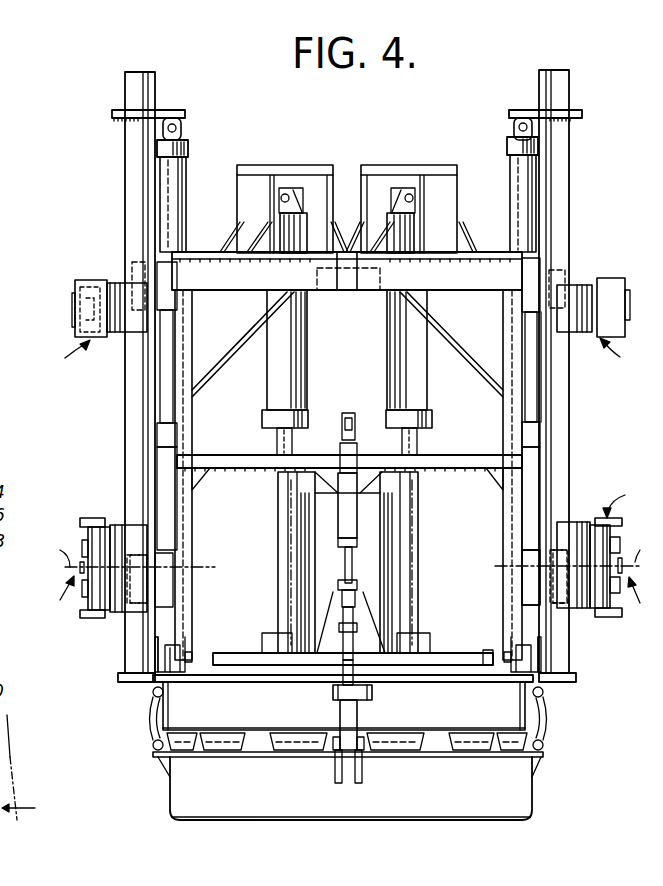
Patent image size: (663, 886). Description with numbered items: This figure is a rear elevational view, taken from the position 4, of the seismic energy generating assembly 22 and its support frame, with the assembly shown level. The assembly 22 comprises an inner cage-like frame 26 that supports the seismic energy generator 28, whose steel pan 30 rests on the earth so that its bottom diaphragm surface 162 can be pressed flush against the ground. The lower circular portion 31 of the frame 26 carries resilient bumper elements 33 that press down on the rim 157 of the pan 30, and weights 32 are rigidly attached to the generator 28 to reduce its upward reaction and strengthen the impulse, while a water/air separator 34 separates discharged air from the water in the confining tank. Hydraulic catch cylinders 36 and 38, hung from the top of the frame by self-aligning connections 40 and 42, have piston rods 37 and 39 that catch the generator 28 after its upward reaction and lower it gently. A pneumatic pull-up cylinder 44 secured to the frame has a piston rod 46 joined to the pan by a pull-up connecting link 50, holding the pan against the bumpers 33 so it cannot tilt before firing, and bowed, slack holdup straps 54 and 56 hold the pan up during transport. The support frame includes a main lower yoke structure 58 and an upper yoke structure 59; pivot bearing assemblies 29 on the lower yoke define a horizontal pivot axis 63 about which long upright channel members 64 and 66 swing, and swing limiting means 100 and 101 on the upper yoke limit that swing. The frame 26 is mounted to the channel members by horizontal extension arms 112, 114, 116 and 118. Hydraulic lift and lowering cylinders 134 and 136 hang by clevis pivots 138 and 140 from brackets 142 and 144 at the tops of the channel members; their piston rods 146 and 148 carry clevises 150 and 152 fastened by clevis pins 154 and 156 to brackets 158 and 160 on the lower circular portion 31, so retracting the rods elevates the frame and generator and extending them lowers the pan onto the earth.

The position 4— 4 is at (26, 767).
The seismic energy generating assembly 22 is at (598, 116).
The inner cage-like frame 26 is at (528, 392).
The seismic energy generator 28 is at (470, 580).
The pivot bearing assemblies 29 is at (52, 595).
The steel pan 30 is at (470, 815).
The lower circular portion 31 is at (290, 716).
The weights 32 is at (455, 650).
The resilient bumper elements 33 is at (417, 750).
The water/air separator 34 is at (312, 562).
The hydraulic catch cylinder 36 is at (268, 385).
The piston rod 37 is at (278, 528).
The hydraulic catch cylinder 38 is at (426, 385).
The piston rod 39 is at (424, 532).
The self-aligning connection 40 is at (296, 178).
The self-aligning connection 42 is at (415, 183).
The pneumatic pull-up cylinder 44 is at (358, 518).
The piston rod 46 is at (357, 567).
The pull-up connecting link 50 is at (358, 715).
The holdup strap 54 is at (152, 718).
The holdup strap 56 is at (549, 718).
The main lower yoke structure 58 is at (92, 518).
The upper yoke structure 59 is at (66, 354).
The horizontal pivot axis 63 is at (50, 554).
The upright channel member 64 is at (130, 436).
The upright channel member 66 is at (570, 425).
The swing limiting means 100 is at (88, 282).
The swing limiting means 101 is at (598, 275).
The horizontal extension arm 112 is at (155, 618).
The horizontal extension arm 114 is at (166, 266).
The horizontal extension arm 116 is at (540, 262).
The horizontal extension arm 118 is at (537, 553).
The hydraulic lift and lowering cylinder 134 is at (188, 172).
The hydraulic lift and lowering cylinder 136 is at (536, 190).
The clevis pivot 138 is at (181, 128).
The clevis pivot 140 is at (516, 126).
The bracket 142 is at (167, 110).
The bracket 144 is at (523, 110).
The piston rod 146 is at (165, 483).
The piston rod 148 is at (530, 475).
The clevis 150 is at (190, 638).
The clevis 152 is at (545, 638).
The clevis pin 154 is at (192, 655).
The clevis pin 156 is at (548, 657).
The rim 157 is at (520, 756).
The bracket 158 is at (175, 668).
The bracket 160 is at (540, 674).
The bottom diaphragm surface 162 is at (305, 817).